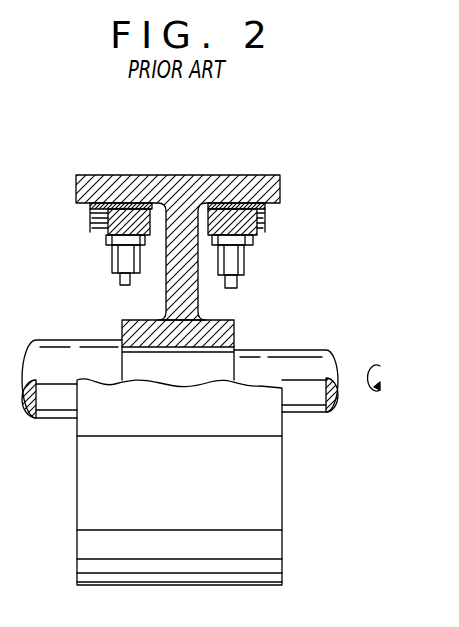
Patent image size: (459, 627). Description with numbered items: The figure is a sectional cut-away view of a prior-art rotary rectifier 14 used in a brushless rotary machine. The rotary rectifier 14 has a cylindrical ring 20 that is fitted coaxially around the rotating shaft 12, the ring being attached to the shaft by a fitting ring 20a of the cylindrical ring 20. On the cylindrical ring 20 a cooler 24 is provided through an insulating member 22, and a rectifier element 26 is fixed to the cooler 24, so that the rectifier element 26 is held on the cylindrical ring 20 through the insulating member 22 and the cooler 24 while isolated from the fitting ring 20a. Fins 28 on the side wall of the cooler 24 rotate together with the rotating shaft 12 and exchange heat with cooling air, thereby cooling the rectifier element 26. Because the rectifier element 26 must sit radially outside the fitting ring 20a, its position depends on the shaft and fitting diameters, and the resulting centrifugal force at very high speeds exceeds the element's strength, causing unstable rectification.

The rotary rectifier 14 is at (253, 166).
The cylindrical ring 20 is at (277, 175).
The fitting ring 20a is at (226, 319).
The insulating member 22 is at (268, 209).
The fins 28 is at (262, 224).
The cooler 24 is at (255, 237).
The rectifier element 26 is at (245, 268).
The rotating shaft 12 is at (316, 350).